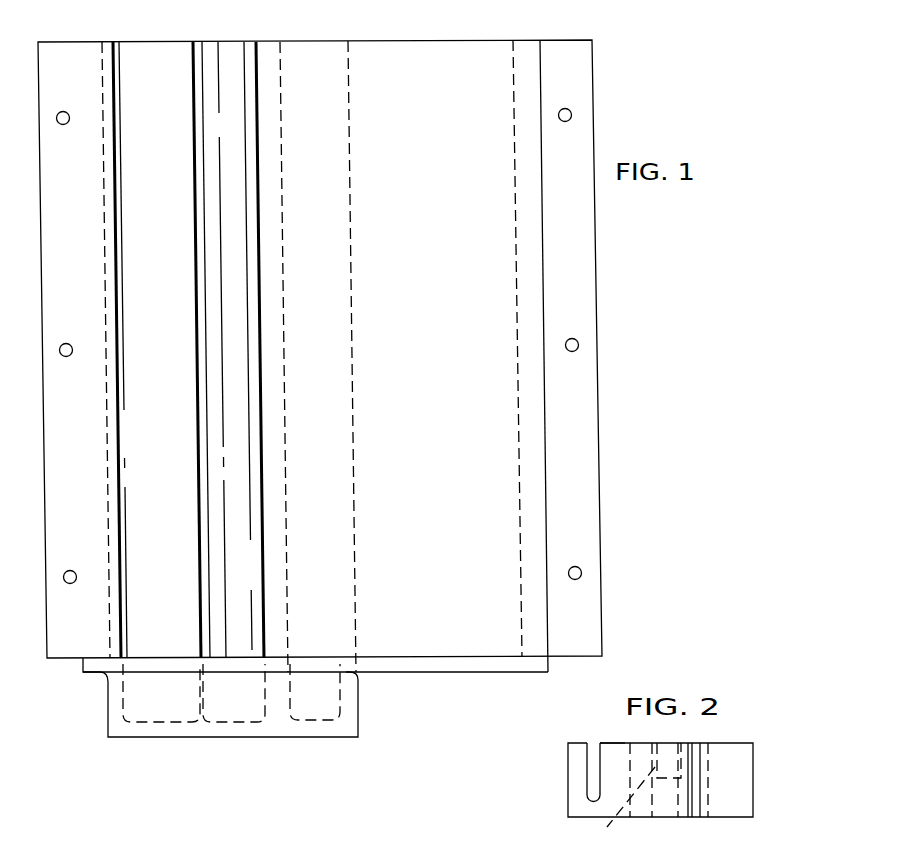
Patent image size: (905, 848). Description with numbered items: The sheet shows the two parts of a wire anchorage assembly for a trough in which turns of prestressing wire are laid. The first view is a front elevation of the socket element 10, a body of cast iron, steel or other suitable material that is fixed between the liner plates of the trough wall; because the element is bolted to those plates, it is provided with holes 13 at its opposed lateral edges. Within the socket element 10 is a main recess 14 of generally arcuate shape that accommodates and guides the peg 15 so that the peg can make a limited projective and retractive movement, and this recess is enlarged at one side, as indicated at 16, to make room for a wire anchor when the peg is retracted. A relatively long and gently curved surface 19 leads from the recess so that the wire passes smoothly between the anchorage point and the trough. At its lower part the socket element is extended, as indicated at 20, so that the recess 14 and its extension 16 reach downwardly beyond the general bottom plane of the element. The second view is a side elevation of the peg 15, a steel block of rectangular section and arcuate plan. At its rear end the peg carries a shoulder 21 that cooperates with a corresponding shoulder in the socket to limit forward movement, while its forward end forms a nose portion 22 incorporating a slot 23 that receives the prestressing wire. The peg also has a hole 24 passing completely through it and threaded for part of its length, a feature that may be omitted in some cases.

In FIG. 1, the socket element 10 is at (467, 86).
In FIG. 1, the holes 13 is at (62, 125).
In FIG. 1, the main recess 14 is at (240, 87).
In FIG. 1, the enlargement or extension of the main recess 16 is at (166, 86).
In FIG. 1, the curved surface 19 is at (457, 641).
In FIG. 1, the lower extension of the socket element 20 is at (350, 676).
In FIG. 2, the peg 15 is at (722, 742).
In FIG. 2, the shoulder 21 is at (688, 790).
In FIG. 2, the nose portion 22 is at (607, 742).
In FIG. 2, the slot 23 is at (590, 765).
In FIG. 2, the hole 24 is at (606, 829).